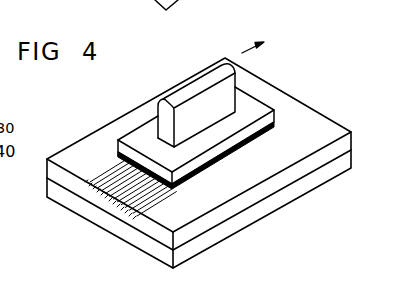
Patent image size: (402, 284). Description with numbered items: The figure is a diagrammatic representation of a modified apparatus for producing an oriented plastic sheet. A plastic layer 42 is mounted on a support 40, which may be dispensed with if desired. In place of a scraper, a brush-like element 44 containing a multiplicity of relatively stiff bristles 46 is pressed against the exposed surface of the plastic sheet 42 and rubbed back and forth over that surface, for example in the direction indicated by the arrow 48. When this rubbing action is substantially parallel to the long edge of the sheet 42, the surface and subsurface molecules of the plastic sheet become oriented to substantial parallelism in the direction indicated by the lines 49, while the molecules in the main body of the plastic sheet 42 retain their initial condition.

The support 40 is at (307, 187).
The plastic layer 42 is at (328, 127).
The brush-like element 44 is at (248, 110).
The stiff bristles 46 is at (245, 138).
The arrow 48 is at (238, 60).
The lines 49 is at (123, 194).